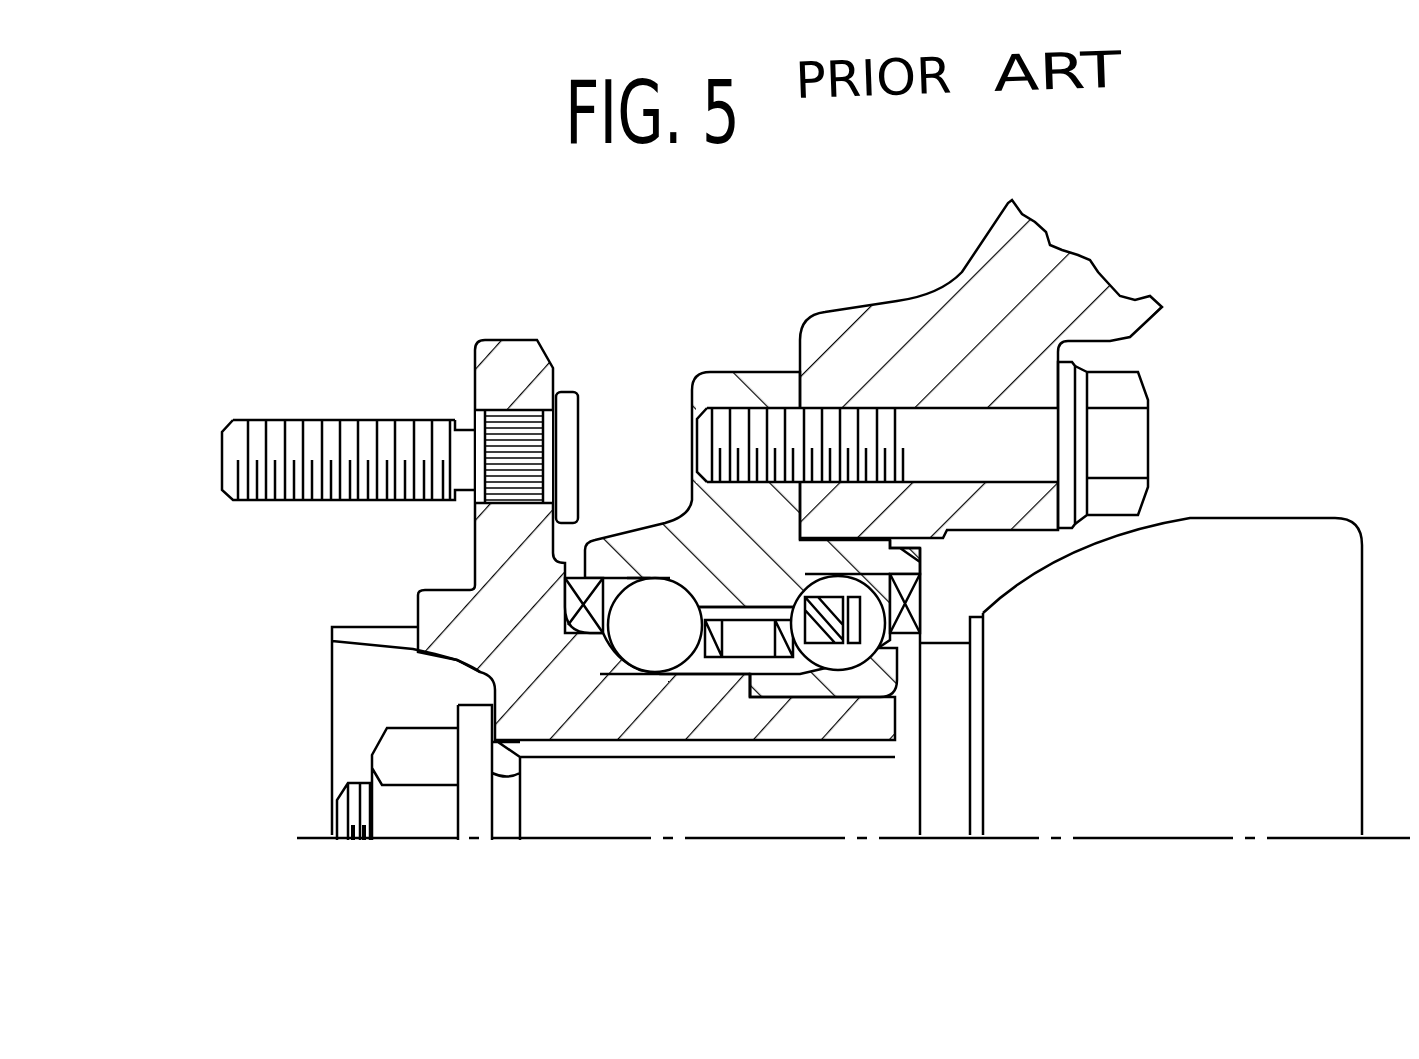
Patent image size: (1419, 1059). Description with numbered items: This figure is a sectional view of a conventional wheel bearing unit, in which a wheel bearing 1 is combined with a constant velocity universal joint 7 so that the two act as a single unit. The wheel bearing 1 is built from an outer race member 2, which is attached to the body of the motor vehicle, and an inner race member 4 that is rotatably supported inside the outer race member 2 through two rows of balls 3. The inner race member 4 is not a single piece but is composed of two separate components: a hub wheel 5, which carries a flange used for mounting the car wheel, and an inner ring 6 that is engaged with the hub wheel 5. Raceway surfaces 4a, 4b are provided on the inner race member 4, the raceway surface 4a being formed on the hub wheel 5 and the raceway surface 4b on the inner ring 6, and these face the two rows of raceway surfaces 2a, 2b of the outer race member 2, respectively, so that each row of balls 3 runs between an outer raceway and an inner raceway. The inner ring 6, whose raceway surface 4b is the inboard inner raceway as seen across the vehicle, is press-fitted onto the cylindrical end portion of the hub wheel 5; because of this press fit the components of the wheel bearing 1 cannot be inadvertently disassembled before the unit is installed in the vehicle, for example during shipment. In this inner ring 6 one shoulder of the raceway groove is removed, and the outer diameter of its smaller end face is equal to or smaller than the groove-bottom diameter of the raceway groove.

The wheel bearing 1 is at (517, 247).
The outer race member 2 is at (688, 517).
The raceway surface of outer race member 2a is at (648, 603).
The raceway surface of outer race member 2b is at (828, 590).
The balls 3 is at (645, 640).
The inner race member 4 is at (328, 587).
The raceway surface of hub wheel 4a is at (643, 660).
The raceway surface of inner ring 4b is at (845, 665).
The hub wheel 5 is at (490, 670).
The inner ring 6 is at (907, 658).
The constant velocity universal joint 7 is at (1262, 502).